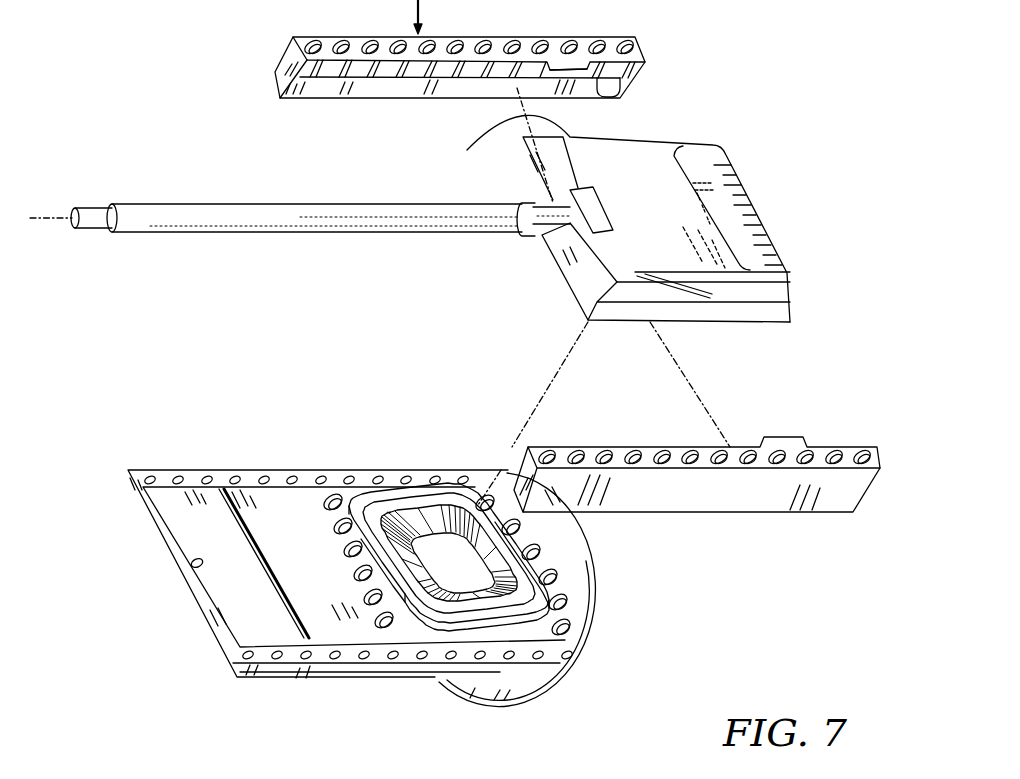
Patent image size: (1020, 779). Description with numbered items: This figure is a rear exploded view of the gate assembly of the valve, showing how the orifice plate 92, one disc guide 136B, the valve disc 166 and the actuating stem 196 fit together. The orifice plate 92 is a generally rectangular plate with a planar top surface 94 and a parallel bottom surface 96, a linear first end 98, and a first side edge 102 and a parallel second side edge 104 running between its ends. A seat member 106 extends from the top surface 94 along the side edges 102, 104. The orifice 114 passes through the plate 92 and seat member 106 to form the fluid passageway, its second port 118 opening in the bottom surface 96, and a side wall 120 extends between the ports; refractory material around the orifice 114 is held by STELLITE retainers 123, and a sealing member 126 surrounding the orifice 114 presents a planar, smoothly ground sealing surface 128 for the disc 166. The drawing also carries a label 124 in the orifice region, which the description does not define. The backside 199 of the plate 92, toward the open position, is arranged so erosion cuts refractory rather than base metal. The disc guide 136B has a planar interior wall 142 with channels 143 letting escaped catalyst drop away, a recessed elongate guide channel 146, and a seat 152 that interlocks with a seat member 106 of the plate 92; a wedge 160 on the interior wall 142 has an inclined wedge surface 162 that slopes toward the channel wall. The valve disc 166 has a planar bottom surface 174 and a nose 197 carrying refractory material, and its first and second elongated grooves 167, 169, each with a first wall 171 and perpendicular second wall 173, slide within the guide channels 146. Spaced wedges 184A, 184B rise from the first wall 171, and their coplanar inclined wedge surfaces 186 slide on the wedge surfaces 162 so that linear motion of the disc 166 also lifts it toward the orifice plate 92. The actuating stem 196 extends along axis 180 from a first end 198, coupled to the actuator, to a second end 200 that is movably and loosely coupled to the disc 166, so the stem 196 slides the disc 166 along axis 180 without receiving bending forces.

The orifice plate 92 is at (177, 582).
The top surface 94 is at (153, 545).
The bottom surface 96 is at (157, 488).
The first end 98 is at (195, 614).
The first side edge 102 is at (357, 640).
The second side edge 104 is at (180, 470).
The seat member 106 is at (127, 478).
The orifice 114 is at (462, 573).
The second port 118 is at (481, 580).
The side wall 120 is at (405, 535).
The retainers 123 is at (540, 610).
The opening 124 is at (433, 540).
The sealing member 126 is at (343, 505).
The sealing surface 128 is at (563, 617).
The disc guide 136B is at (810, 512).
The interior wall 142 is at (310, 69).
The channels 143 is at (500, 68).
The guide channel 146 is at (305, 75).
The seat 152 is at (352, 88).
The wedge 160 is at (640, 72).
The wedge surface 162 is at (621, 91).
The valve disc 166 is at (570, 288).
The first elongated groove 167 is at (618, 288).
The second elongated groove 169 is at (503, 143).
The first wall 171 is at (773, 302).
The second wall 173 is at (777, 283).
The bottom surface 174 is at (728, 222).
The axis 180 is at (40, 218).
The wedge 184A is at (506, 150).
The wedge 184B is at (667, 296).
The wedge surface 186 is at (685, 292).
The actuating stem 196 is at (140, 198).
The nose 197 is at (706, 171).
The first end 198 is at (92, 230).
The backside 199 is at (390, 565).
The second end 200 is at (530, 228).